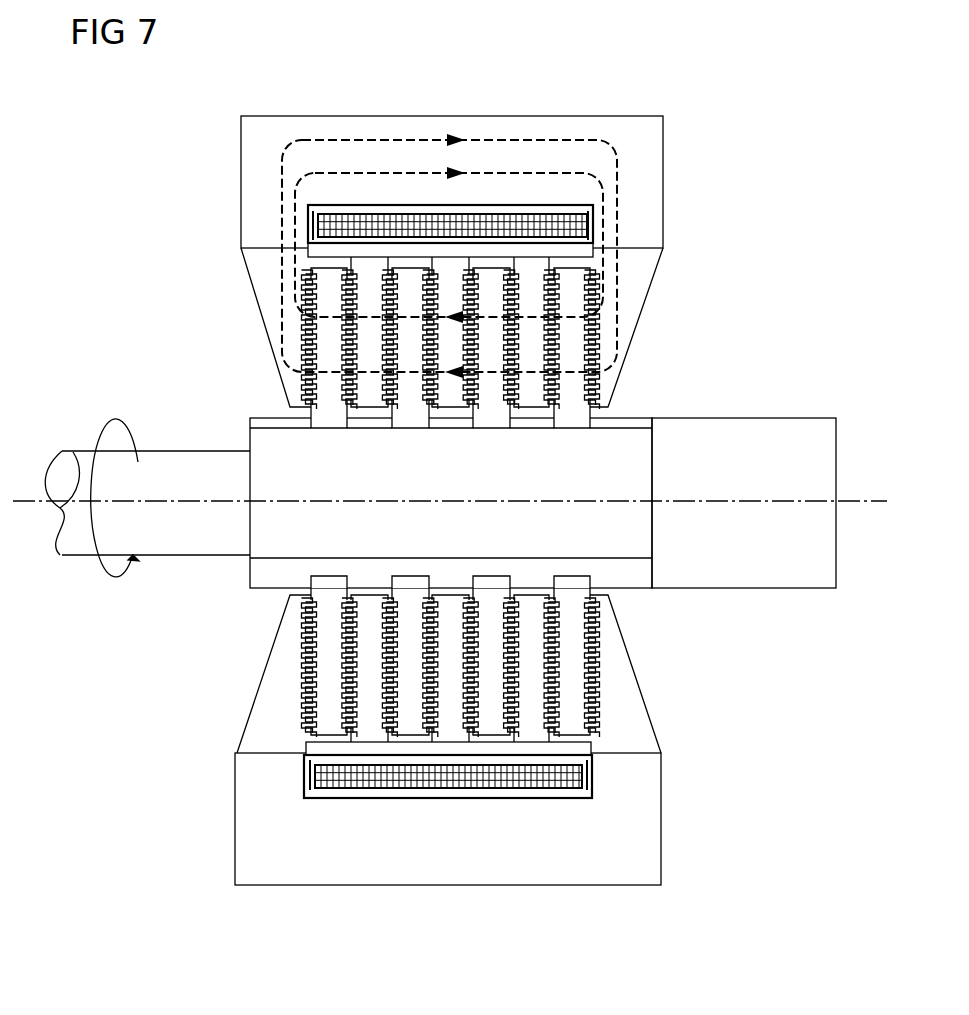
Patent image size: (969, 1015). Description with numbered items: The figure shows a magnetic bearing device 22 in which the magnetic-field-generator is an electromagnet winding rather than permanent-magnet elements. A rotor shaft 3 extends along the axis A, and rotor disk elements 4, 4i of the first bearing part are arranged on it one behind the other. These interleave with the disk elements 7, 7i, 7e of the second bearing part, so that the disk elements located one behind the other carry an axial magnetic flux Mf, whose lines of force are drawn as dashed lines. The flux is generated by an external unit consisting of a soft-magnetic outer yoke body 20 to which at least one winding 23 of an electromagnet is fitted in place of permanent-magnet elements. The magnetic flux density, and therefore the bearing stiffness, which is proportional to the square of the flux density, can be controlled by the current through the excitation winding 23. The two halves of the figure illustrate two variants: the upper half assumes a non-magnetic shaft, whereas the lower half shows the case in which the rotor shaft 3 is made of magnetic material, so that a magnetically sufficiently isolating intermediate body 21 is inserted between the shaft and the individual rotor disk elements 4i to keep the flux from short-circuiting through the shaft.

The rotor shaft 3 is at (62, 537).
The rotor disk elements 4 is at (440, 501).
The rotor disk elements 4i is at (406, 452).
The disk elements 7 is at (451, 634).
The disk elements 7i is at (523, 600).
The disk elements 7e is at (630, 305).
The soft-magnetic outer yoke body 20 is at (651, 187).
The intermediate body 21 is at (254, 572).
The magnetic bearing device 22 is at (207, 716).
The winding 23 is at (318, 228).
The magnetic flux Mf is at (483, 140).
The axis of rotation A is at (868, 501).